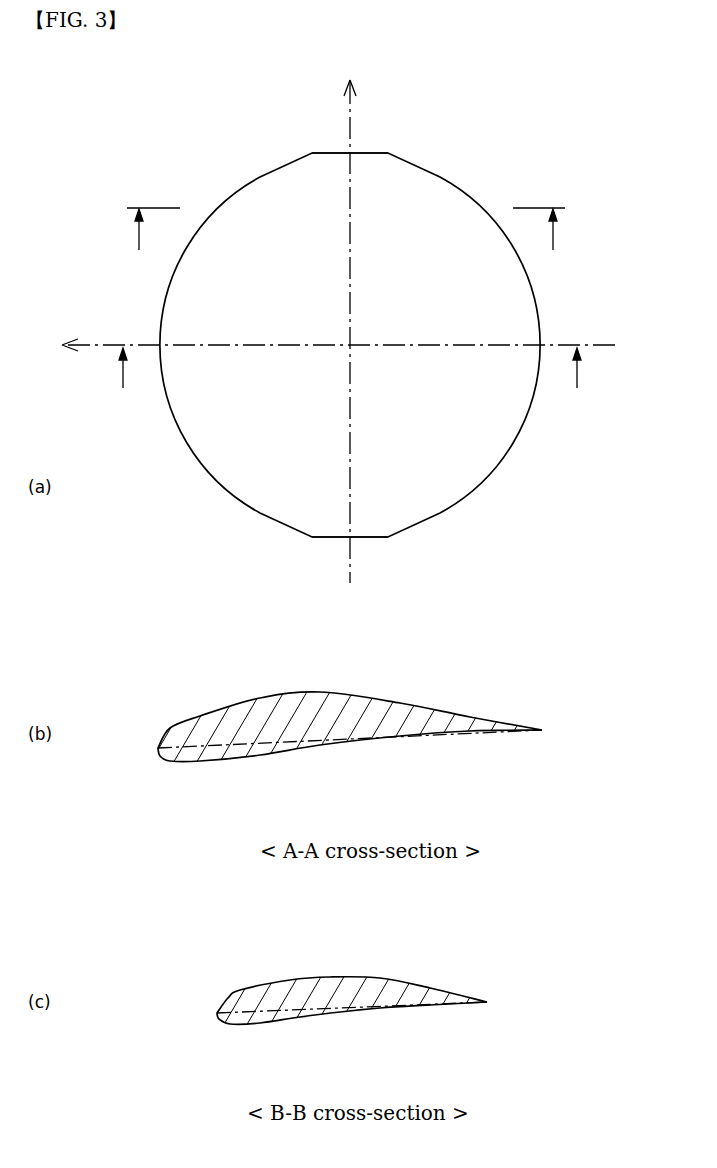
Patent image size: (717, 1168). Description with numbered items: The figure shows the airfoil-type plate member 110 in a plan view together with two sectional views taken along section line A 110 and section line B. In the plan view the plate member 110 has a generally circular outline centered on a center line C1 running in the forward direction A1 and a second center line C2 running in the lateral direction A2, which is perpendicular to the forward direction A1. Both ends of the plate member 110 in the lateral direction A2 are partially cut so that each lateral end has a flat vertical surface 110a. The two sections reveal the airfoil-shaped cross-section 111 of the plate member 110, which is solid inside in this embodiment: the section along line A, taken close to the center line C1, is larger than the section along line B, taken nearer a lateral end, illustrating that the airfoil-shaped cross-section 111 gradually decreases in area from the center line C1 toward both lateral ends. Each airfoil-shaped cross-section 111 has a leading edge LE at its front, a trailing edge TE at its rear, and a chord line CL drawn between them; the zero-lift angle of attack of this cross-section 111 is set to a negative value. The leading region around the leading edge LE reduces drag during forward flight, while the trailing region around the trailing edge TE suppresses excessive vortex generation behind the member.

The airfoil-type plate member 110 is at (485, 160).
The vertical surface 110a is at (330, 153).
The airfoil-shaped cross-section 111 is at (385, 694).
The center line C1 is at (238, 345).
The second center line C2 is at (352, 240).
The forward direction A1 is at (58, 347).
The lateral direction A2 is at (349, 79).
The section line A- A is at (348, 370).
The section line B- B is at (345, 231).
The leading edge LE is at (158, 750).
The trailing edge TE is at (544, 731).
The chord line CL is at (386, 740).